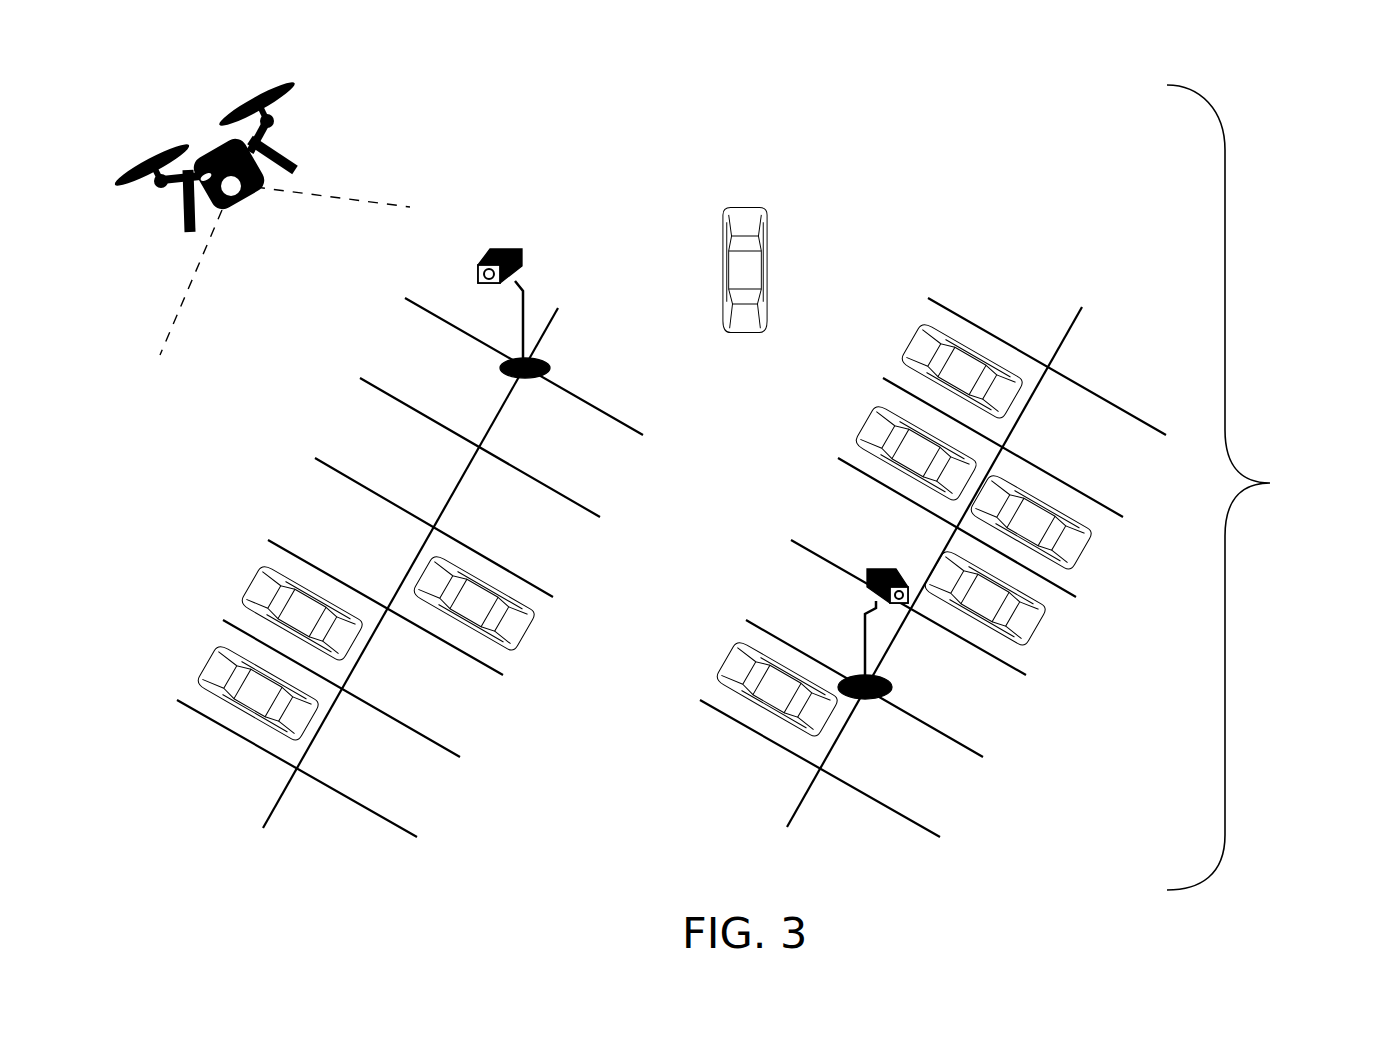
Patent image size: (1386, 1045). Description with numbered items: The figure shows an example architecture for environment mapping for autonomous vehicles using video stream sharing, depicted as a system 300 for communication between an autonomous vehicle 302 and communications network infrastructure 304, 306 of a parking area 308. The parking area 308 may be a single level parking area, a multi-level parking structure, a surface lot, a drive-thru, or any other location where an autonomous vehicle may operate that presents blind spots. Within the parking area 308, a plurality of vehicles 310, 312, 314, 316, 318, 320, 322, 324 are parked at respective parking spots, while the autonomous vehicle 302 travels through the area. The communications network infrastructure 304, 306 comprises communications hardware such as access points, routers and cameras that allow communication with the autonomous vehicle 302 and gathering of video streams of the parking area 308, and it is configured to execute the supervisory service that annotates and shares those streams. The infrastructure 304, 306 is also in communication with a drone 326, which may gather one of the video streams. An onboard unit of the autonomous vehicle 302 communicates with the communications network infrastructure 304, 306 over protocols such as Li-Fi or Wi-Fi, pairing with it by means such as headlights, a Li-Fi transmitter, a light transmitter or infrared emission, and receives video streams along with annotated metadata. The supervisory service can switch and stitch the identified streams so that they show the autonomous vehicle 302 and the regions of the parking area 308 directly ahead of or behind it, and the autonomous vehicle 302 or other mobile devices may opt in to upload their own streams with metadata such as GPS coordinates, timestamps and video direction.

The system 300 is at (1274, 105).
The autonomous vehicle 302 is at (728, 202).
The communications network infrastructure 304 is at (524, 382).
The communications network infrastructure 306 is at (862, 700).
The parking area 308 is at (748, 487).
The vehicle 310 is at (217, 638).
The vehicle 312 is at (262, 558).
The vehicle 314 is at (515, 656).
The vehicle 316 is at (735, 633).
The vehicle 318 is at (873, 400).
The vehicle 320 is at (917, 320).
The vehicle 322 is at (1027, 653).
The vehicle 324 is at (1070, 573).
The drone 326 is at (296, 78).